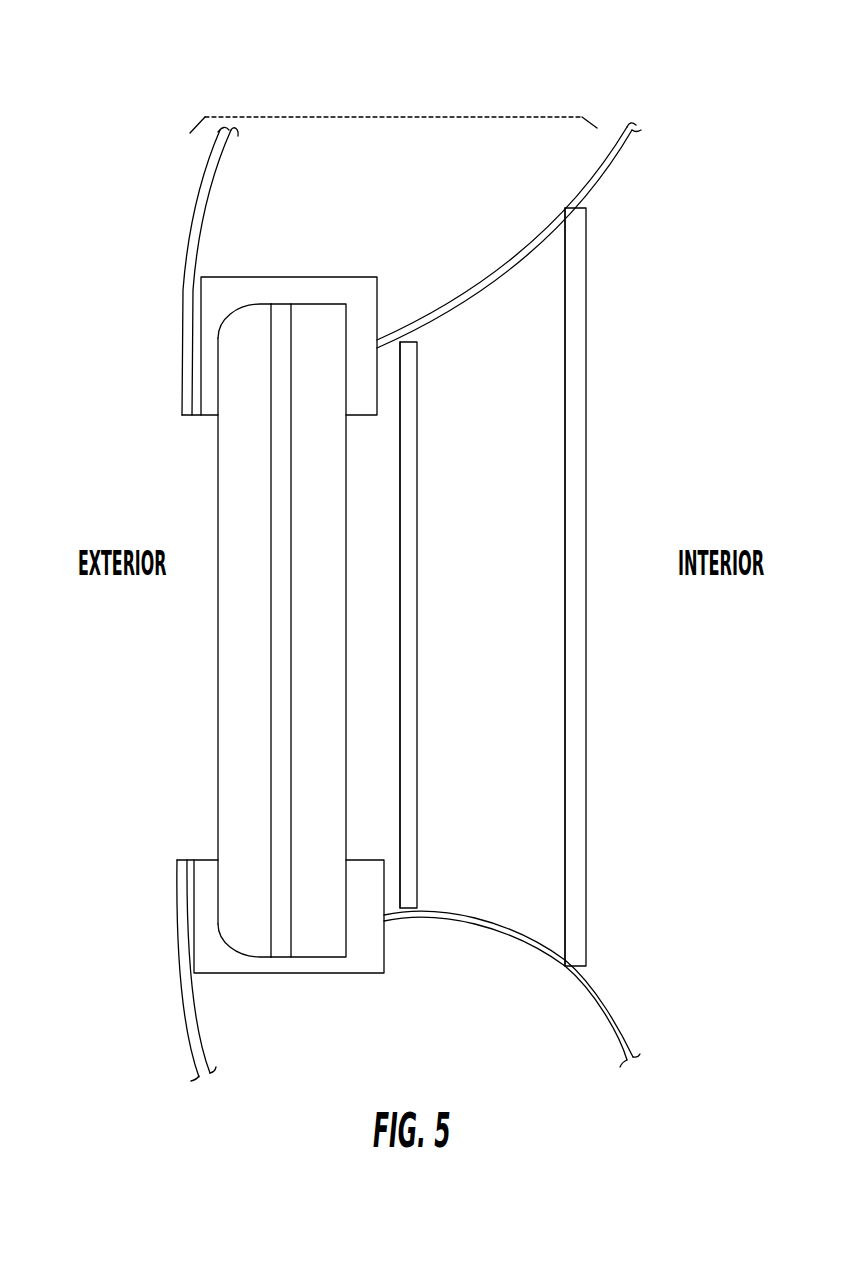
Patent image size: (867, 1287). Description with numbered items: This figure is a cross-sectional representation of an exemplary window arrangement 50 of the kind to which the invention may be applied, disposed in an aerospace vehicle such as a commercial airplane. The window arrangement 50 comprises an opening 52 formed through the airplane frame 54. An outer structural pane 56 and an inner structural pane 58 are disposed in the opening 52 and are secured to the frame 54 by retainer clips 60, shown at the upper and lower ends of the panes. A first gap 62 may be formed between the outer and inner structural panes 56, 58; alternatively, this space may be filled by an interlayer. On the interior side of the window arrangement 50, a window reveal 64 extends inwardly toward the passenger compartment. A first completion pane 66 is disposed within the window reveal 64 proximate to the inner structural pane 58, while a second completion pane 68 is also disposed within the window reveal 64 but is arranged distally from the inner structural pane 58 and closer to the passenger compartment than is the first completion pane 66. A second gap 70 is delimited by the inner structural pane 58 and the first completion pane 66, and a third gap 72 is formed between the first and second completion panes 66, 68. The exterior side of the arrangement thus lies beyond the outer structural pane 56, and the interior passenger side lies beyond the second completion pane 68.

The window arrangement 50 is at (117, 113).
The opening 52 is at (200, 630).
The airplane frame 54 is at (197, 233).
The outer structural pane 56 is at (246, 508).
The inner structural pane 58 is at (311, 641).
The retainer clips 60 is at (332, 277).
The first gap 62 is at (281, 776).
The window reveal 64 is at (603, 168).
The first completion pane 66 is at (417, 410).
The second completion pane 68 is at (586, 448).
The second gap 70 is at (370, 673).
The third gap 72 is at (490, 780).